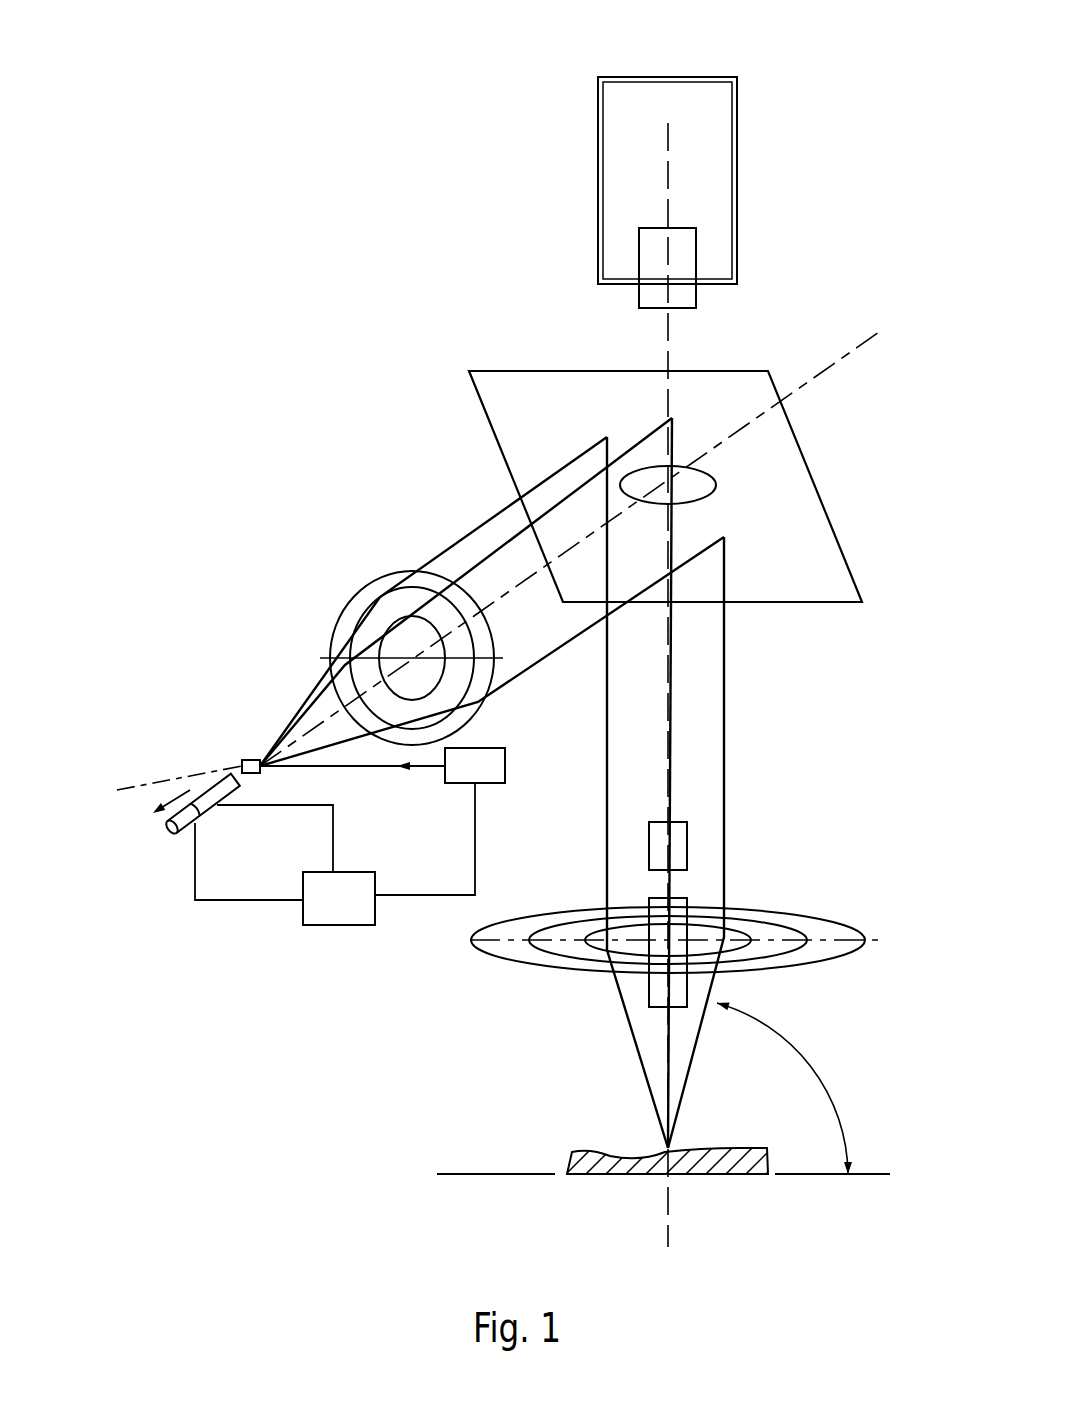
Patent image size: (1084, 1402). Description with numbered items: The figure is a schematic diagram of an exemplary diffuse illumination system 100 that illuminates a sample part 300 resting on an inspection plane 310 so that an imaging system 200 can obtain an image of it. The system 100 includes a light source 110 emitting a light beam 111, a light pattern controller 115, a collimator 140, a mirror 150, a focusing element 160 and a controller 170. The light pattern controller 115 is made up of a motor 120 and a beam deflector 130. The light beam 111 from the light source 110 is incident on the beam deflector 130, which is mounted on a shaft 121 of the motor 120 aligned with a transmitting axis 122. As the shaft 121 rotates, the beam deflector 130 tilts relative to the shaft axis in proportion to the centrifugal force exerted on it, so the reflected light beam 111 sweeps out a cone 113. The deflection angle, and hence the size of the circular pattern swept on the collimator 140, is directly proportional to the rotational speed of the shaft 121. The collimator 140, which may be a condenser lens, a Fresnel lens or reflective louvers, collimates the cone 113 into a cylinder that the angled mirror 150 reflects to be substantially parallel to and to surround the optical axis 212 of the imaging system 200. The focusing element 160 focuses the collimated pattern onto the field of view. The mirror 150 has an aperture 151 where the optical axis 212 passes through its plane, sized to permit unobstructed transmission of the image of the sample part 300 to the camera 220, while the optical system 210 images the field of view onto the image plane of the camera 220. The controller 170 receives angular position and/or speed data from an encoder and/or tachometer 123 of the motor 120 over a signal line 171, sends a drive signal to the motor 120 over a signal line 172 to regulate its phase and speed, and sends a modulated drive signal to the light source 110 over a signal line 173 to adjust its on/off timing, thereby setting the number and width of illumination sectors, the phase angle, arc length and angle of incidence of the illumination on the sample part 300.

The diffuse illumination system 100 is at (253, 498).
The light source 110 is at (475, 765).
The light beam 111 is at (372, 768).
The cone 113 is at (284, 697).
The light pattern controller 115 is at (177, 616).
The motor 120 is at (215, 808).
The shaft 121 is at (250, 775).
The transmitting axis 122 is at (882, 330).
The encoder and/or tachometer 123 is at (190, 833).
The beam deflector 130 is at (243, 758).
The collimator 140 is at (385, 585).
The mirror 150 is at (820, 494).
The aperture 151 is at (712, 494).
The focusing element 160 is at (827, 930).
The controller 170 is at (339, 898).
The signal line 171 is at (195, 877).
The signal line 172 is at (333, 842).
The signal line 173 is at (475, 860).
The imaging system 200 is at (790, 62).
The optical system 210 is at (687, 903).
The optical axis 212 is at (668, 333).
The camera 220 is at (737, 128).
The sample part 300 is at (757, 1150).
The inspection plane 310 is at (877, 1174).